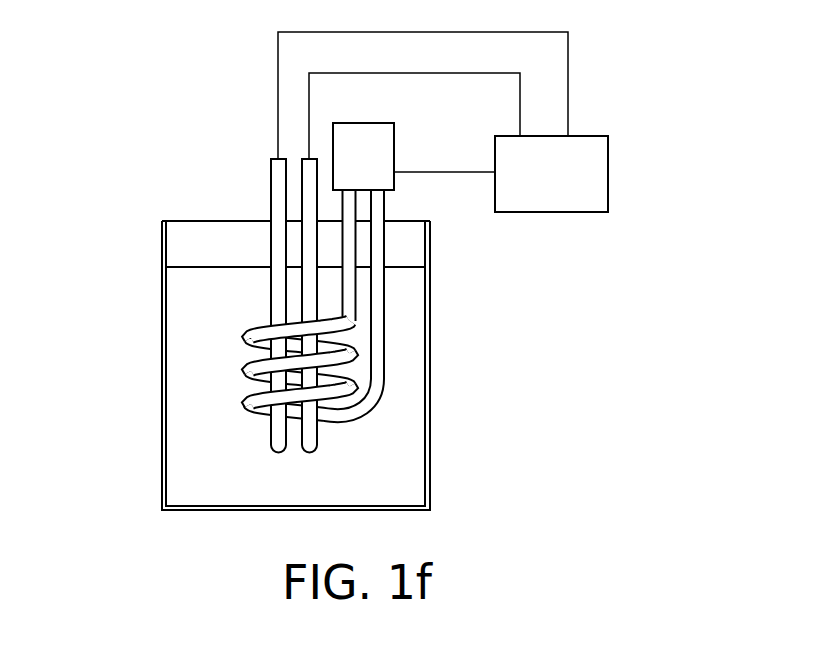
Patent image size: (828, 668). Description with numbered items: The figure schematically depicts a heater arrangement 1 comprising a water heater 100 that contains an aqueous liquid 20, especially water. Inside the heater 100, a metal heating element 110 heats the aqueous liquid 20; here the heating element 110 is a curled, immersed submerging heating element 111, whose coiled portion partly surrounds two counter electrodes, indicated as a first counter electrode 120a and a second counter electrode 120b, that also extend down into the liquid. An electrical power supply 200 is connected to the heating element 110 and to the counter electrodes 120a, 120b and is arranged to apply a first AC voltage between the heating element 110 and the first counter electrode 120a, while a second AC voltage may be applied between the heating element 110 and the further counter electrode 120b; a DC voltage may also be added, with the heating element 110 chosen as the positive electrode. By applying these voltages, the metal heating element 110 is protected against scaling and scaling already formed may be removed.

The heater arrangement 1 is at (140, 247).
The water heater 100 is at (135, 483).
The aqueous liquid 20 is at (413, 431).
The heating element 110 is at (380, 207).
The submerging heating element 111 is at (375, 242).
The first counter electrode 120a is at (276, 173).
The second counter electrode 120b is at (307, 165).
The electrical power supply 200 is at (601, 114).